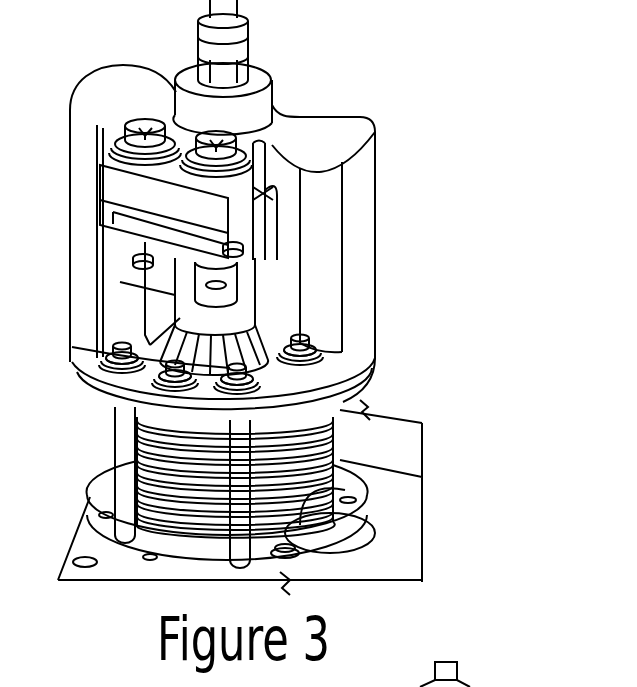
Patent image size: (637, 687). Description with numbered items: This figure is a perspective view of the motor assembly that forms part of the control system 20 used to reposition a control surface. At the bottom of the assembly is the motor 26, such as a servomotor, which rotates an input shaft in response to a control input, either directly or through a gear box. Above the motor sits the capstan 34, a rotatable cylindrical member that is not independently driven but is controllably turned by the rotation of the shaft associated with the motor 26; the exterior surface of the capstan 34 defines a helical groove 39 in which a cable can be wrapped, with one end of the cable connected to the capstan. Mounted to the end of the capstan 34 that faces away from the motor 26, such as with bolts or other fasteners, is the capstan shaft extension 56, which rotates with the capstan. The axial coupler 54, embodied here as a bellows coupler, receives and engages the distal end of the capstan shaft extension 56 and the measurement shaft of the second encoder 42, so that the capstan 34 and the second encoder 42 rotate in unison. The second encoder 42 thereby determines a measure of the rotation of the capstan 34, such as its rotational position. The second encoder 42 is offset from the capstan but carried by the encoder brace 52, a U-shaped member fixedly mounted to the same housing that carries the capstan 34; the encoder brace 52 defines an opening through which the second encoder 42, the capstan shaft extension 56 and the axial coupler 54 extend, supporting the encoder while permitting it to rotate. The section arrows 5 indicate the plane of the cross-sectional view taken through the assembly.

The section line 5- 5 is at (38, 188).
The control system 20 is at (456, 276).
The motor 26 is at (408, 550).
The capstan 34 is at (340, 438).
The helical groove 39 is at (168, 560).
The second encoder 42 is at (252, 107).
The encoder brace 52 is at (360, 252).
The axial coupler 54 is at (147, 280).
The capstan shaft extension 56 is at (137, 440).